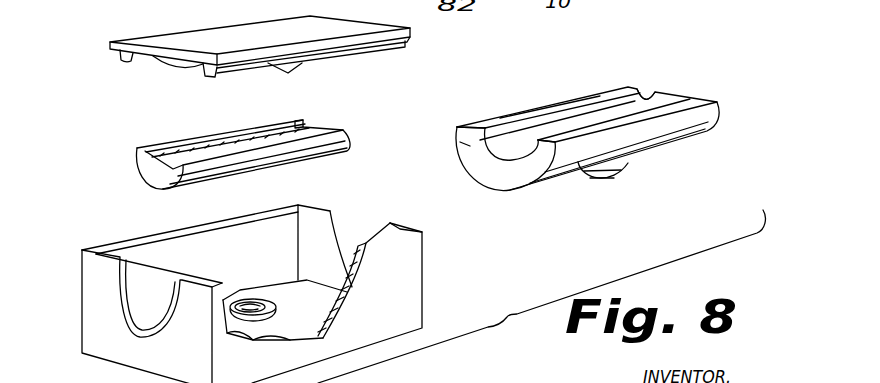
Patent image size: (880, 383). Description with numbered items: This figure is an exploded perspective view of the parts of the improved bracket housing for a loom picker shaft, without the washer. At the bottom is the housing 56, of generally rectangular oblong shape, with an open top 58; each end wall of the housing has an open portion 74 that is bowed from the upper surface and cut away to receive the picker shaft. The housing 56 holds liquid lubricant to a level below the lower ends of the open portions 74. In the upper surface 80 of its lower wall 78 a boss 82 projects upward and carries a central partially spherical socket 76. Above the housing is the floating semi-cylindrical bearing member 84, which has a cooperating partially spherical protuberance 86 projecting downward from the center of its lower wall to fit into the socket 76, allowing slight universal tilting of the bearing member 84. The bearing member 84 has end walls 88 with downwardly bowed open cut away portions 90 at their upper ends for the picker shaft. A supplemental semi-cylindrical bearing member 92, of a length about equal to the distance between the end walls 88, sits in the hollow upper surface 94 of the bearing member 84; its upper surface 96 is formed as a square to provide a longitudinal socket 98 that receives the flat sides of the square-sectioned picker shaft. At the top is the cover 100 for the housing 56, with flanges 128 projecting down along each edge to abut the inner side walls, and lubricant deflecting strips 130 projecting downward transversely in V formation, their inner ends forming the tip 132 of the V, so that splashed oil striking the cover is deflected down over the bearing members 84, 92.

The housing 56 is at (416, 286).
The open top 58 is at (300, 207).
The open portion 74 is at (137, 295).
The partially spherical socket 76 is at (252, 301).
The lower wall 78 is at (300, 298).
The upper surface 80 is at (313, 288).
The boss 82 is at (288, 316).
The floating semi-cylindrical bearing member 84 is at (528, 112).
The partially spherical protuberance 86 is at (610, 170).
The end walls 88 is at (462, 143).
The open cut away portions 90 is at (510, 138).
The supplemental semi-cylindrical bearing member 92 is at (348, 137).
The hollow upper surface 94 is at (585, 115).
The upper surface 96 is at (293, 120).
The longitudinal socket 98 is at (238, 132).
The cover 100 is at (190, 44).
The flanges 128 is at (119, 57).
The lubricant deflecting strips 130 is at (180, 63).
The tip 132 is at (288, 68).